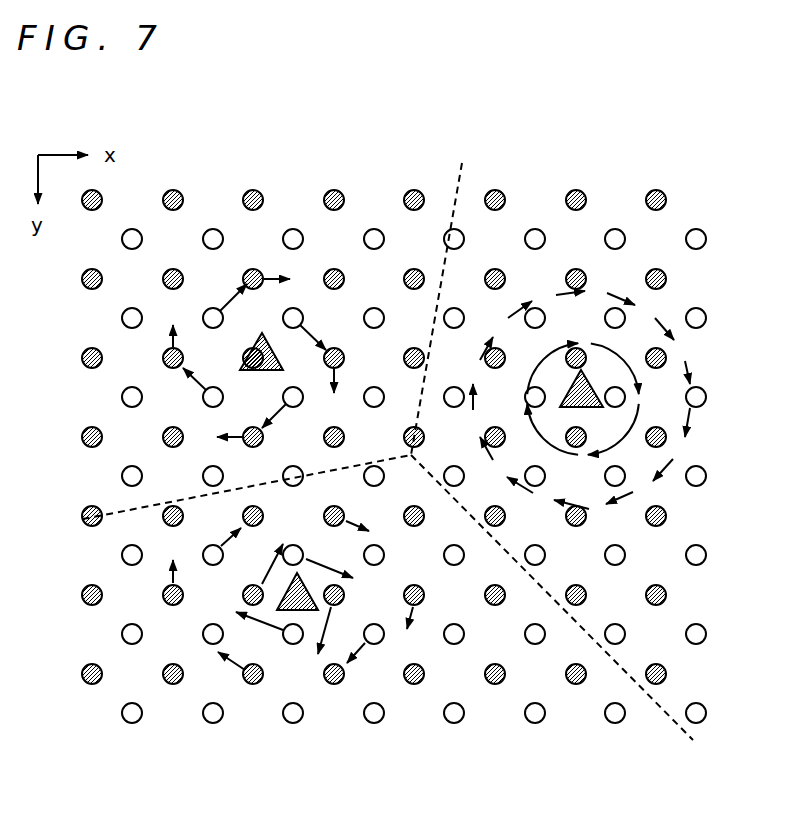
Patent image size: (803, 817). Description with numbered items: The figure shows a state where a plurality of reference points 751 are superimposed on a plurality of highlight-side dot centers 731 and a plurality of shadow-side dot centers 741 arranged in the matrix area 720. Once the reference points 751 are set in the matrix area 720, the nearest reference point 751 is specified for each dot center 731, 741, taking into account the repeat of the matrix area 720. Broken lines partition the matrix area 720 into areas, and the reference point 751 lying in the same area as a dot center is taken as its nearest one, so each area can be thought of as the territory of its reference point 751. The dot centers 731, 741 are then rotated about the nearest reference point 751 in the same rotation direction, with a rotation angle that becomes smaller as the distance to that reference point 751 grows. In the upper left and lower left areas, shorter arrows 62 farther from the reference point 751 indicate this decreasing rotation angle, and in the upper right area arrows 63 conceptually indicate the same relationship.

The matrix area 720 is at (186, 105).
The shadow-side dot center 741 is at (330, 191).
The highlight-side dot center 731 is at (374, 231).
The reference point 751 is at (247, 354).
The arrows 62 is at (228, 290).
The arrows 63 is at (656, 318).